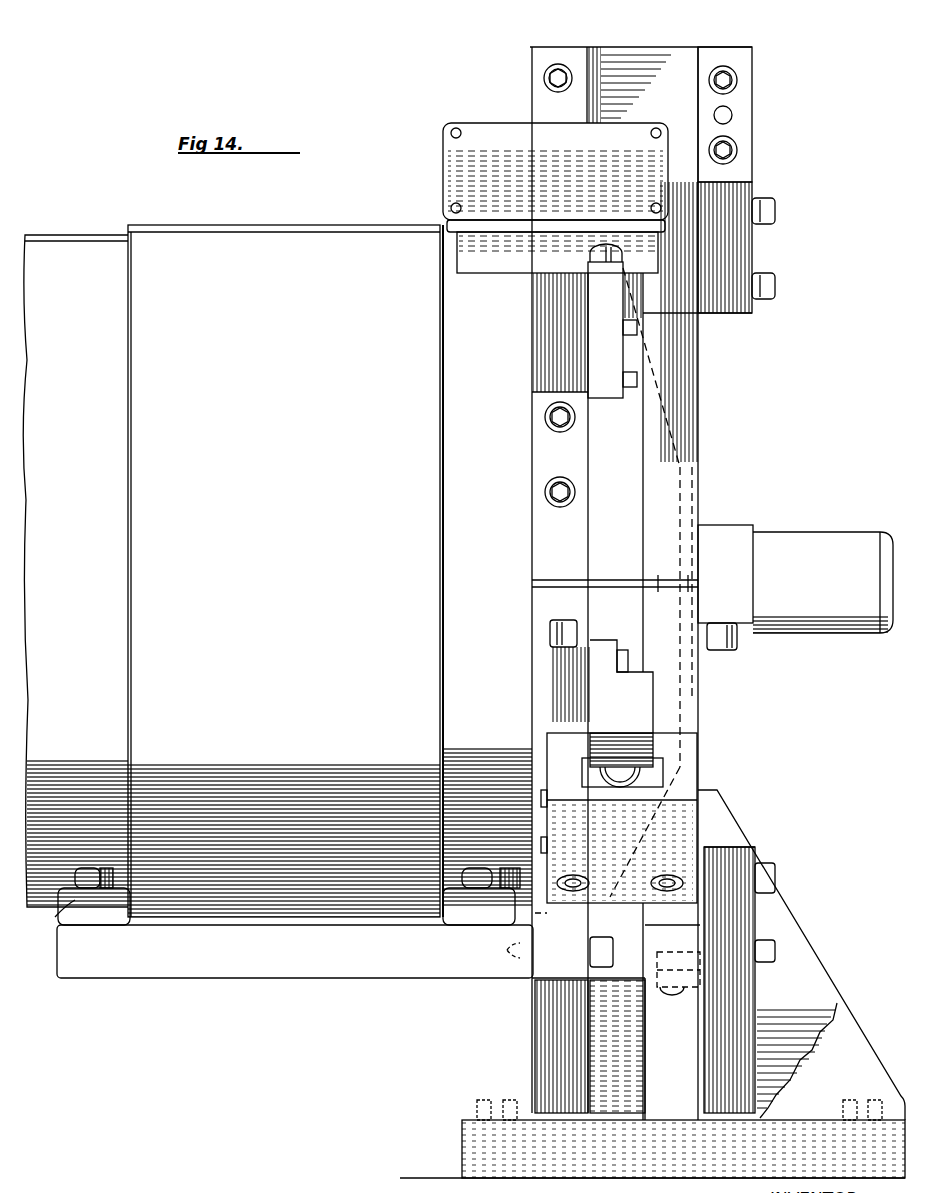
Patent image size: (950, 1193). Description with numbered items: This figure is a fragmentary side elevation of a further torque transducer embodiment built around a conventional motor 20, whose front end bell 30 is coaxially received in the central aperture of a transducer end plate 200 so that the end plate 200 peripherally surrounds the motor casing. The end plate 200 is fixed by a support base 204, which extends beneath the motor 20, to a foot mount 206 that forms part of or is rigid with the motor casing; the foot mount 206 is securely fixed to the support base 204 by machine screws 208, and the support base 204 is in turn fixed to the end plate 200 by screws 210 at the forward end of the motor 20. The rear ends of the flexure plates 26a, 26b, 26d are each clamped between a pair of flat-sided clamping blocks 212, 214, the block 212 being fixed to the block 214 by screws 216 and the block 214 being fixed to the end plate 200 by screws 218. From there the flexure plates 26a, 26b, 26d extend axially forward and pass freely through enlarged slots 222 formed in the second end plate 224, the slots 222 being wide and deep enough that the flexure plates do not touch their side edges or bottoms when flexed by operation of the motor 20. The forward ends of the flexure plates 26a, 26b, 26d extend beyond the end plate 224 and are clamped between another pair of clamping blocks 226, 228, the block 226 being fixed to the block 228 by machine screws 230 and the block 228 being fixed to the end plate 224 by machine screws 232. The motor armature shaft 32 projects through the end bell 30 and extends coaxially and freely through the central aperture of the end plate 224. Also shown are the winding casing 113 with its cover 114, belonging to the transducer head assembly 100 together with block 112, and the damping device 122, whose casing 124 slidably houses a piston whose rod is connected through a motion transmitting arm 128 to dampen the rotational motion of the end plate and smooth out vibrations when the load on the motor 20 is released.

The motor 20 is at (268, 222).
The front end bell 30 is at (490, 475).
The motor armature shaft 32 is at (808, 532).
The head assembly 100 is at (555, 154).
The block 112 is at (620, 340).
The casing 113 is at (482, 275).
The cover 114 is at (548, 160).
The damping device 122 is at (660, 818).
The casing 124 is at (610, 831).
The motion transmitting arm 128 is at (628, 706).
The end plate 200 is at (532, 355).
The support base 204 is at (303, 978).
The foot mount 206 is at (108, 917).
The machine screws 208 is at (55, 917).
The screws 210 is at (600, 945).
The clamping block 212 is at (544, 50).
The clamping block 214 is at (538, 537).
The screws 216 is at (565, 66).
The screws 218 is at (545, 420).
The enlarged slots 222 is at (668, 580).
The second end plate 224 is at (700, 340).
The clamping block 226 is at (740, 115).
The clamping block 228 is at (752, 305).
The machine screws 230 is at (737, 80).
The machine screws 232 is at (776, 213).
The flexure plate 26a is at (615, 580).
The flexure plate 26b is at (638, 48).
The flexure plate 26d is at (662, 988).